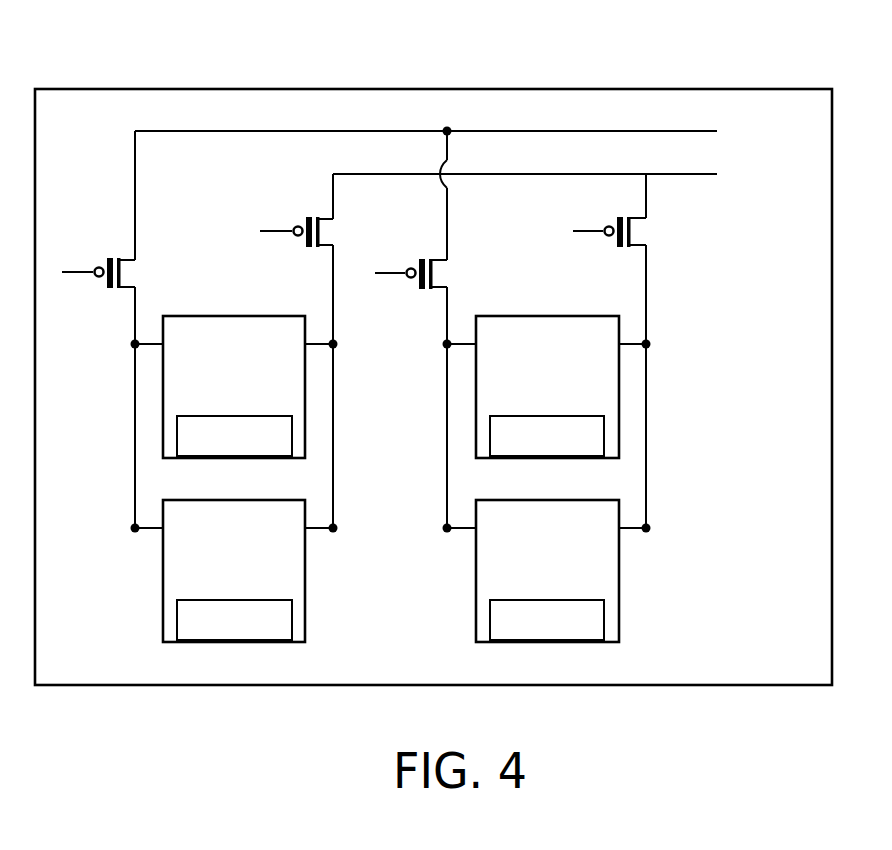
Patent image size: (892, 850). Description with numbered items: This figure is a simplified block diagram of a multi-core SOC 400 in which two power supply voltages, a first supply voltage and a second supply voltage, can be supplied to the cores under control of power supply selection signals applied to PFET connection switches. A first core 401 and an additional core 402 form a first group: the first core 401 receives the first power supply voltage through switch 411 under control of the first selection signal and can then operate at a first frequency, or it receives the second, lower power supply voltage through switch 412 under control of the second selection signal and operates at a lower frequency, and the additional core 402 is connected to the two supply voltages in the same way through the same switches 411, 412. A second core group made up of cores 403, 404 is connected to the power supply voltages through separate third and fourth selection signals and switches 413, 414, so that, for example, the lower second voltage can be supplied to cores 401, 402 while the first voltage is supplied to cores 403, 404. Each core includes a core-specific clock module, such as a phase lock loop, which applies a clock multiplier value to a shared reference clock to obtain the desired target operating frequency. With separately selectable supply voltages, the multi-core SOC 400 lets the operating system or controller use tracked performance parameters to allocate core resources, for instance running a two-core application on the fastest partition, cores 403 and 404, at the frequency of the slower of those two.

The multi-core SOC 400 is at (84, 40).
The first core 401 is at (252, 393).
The additional core 402 is at (252, 577).
The core 403 is at (565, 393).
The core 404 is at (565, 577).
The PFET connection switch 411 is at (122, 272).
The PFET connection switch 412 is at (321, 231).
The PFET connection switch 413 is at (434, 273).
The PFET connection switch 414 is at (632, 231).